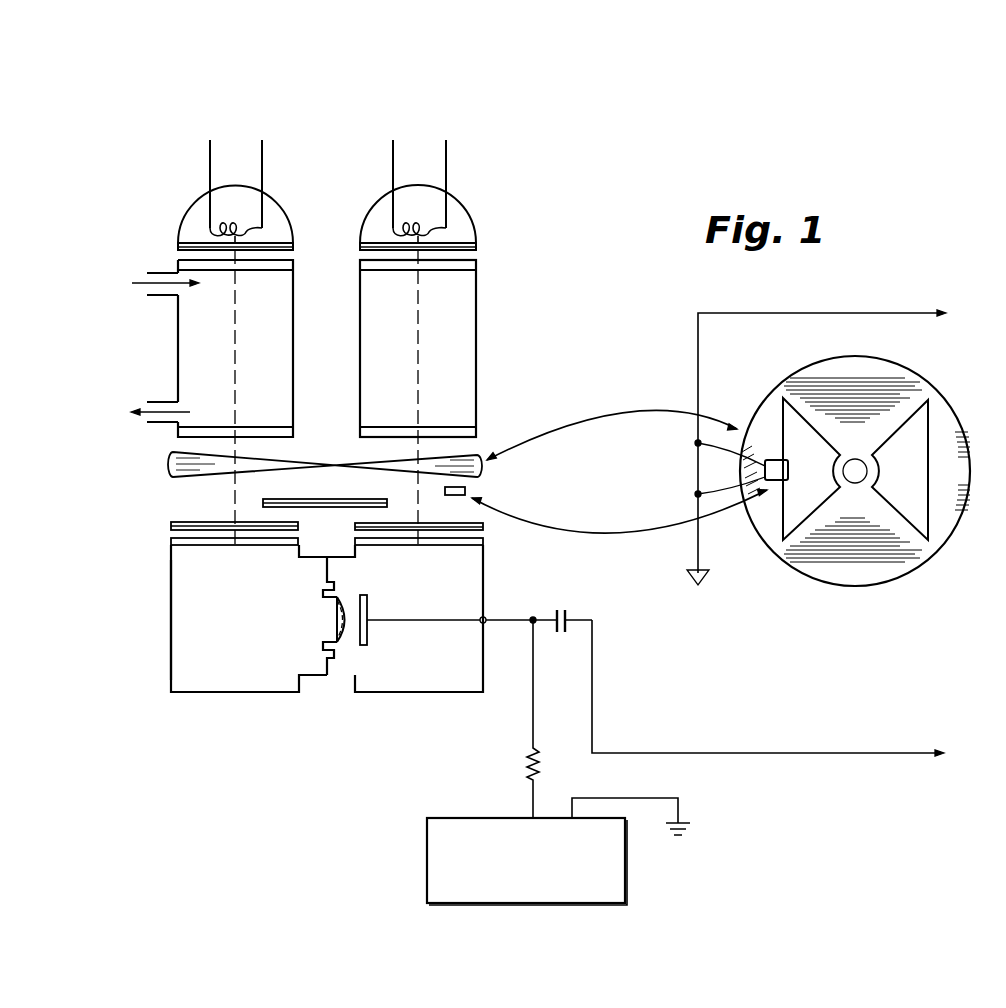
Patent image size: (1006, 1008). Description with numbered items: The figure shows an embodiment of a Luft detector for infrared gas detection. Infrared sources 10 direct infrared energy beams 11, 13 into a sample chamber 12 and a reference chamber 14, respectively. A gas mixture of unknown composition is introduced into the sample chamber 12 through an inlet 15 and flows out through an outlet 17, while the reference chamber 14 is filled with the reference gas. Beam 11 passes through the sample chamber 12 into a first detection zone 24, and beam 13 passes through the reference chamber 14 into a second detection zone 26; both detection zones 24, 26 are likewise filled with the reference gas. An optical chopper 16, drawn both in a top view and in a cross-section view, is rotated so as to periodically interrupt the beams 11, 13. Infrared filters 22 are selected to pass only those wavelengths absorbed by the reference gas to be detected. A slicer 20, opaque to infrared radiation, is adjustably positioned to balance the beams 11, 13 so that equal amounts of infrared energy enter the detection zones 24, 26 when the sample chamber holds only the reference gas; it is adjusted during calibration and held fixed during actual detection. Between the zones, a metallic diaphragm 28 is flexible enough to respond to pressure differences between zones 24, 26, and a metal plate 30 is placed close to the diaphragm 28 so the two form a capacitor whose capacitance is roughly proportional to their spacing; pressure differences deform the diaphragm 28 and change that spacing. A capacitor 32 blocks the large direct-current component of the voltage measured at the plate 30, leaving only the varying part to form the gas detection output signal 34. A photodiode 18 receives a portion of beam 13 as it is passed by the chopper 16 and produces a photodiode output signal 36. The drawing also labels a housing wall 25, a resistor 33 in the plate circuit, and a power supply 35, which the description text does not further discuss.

The infrared sources 10 is at (368, 225).
The infrared energy beam 11 is at (237, 294).
The sample chamber 12 is at (178, 365).
The infrared energy beam 13 is at (420, 312).
The reference chamber 14 is at (463, 290).
The inlet 15 is at (147, 273).
The optical chopper 16 is at (173, 465).
The outlet 17 is at (131, 403).
The photodiode 18 is at (623, 533).
The slicer 20 is at (263, 501).
The infrared filters 22 is at (215, 525).
The first detection zone 24 is at (195, 650).
The housing wall 25 is at (166, 606).
The second detection zone 26 is at (463, 650).
The diaphragm 28 is at (327, 617).
The metal plate 30 is at (375, 636).
The capacitor 32 is at (557, 614).
The resistor 33 is at (545, 762).
The gas detection output signal 34 is at (905, 755).
The 150 V DC power supply 35 is at (602, 898).
The photodiode output signal 36 is at (905, 313).